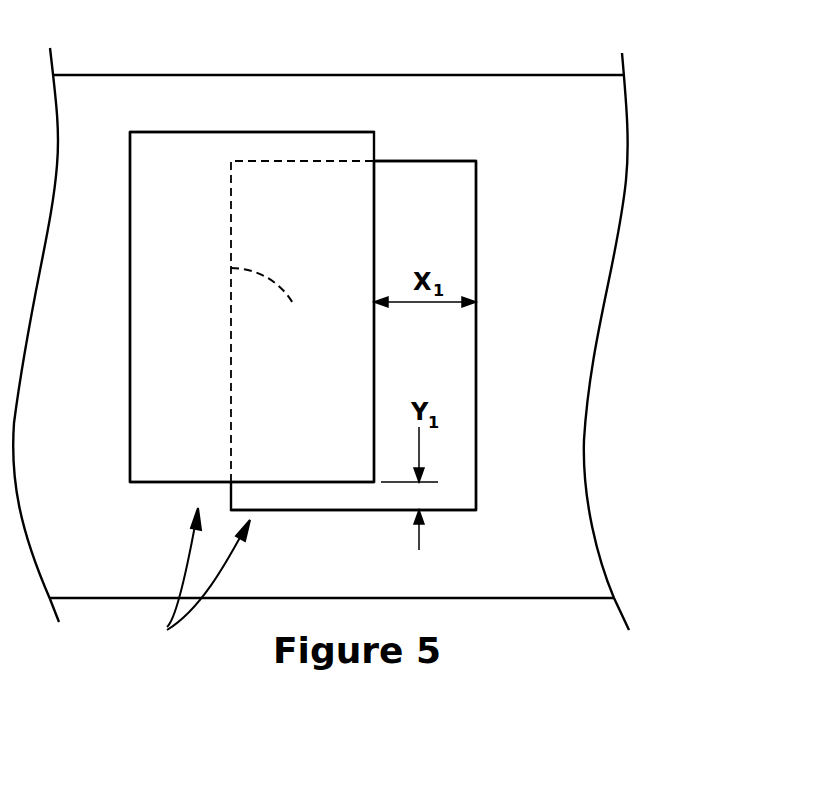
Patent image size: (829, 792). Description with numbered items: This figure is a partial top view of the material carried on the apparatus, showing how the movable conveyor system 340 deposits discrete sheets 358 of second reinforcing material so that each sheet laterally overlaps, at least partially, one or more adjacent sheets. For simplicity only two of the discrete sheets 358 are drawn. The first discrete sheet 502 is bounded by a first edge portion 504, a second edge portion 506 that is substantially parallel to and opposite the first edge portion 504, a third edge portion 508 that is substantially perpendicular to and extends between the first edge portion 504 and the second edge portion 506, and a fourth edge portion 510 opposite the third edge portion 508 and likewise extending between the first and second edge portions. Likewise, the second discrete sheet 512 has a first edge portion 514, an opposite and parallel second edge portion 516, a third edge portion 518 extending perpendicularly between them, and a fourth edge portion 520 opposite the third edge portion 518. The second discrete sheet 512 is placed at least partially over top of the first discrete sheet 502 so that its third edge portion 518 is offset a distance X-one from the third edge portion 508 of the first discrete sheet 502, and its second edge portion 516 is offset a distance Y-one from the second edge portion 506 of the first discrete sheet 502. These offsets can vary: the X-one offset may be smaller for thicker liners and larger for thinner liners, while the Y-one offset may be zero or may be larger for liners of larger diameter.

The movable conveyor system 340 is at (580, 207).
The discrete sheets 358 is at (185, 578).
The first discrete sheet 502 is at (436, 349).
The first edge portion 504 is at (428, 160).
The second edge portion 506 is at (370, 512).
The third edge portion 508 is at (476, 398).
The fourth edge portion 510 is at (282, 302).
The second discrete sheet 512 is at (175, 415).
The first edge portion 514 is at (177, 131).
The second edge portion 516 is at (158, 482).
The third edge portion 518 is at (374, 213).
The fourth edge portion 520 is at (128, 248).